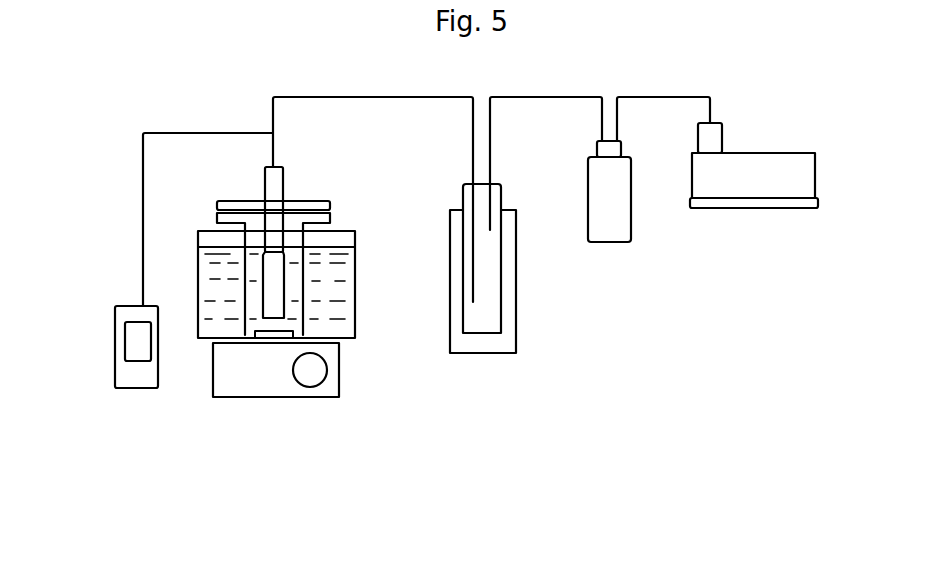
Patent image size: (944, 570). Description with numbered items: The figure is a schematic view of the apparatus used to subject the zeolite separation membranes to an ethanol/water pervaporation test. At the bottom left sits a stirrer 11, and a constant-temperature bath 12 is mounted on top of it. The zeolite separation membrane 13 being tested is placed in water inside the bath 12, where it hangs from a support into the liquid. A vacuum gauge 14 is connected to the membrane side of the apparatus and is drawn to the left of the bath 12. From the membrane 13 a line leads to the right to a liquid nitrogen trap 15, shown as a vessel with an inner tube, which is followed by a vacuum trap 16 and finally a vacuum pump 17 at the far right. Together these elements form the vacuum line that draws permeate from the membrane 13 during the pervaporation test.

The stirrer 11 is at (290, 394).
The constant-temperature bath 12 is at (355, 320).
The zeolite separation membrane 13 is at (273, 297).
The vacuum gauge 14 is at (115, 345).
The liquid nitrogen trap 15 is at (450, 262).
The vacuum trap 16 is at (603, 187).
The vacuum pump 17 is at (712, 177).